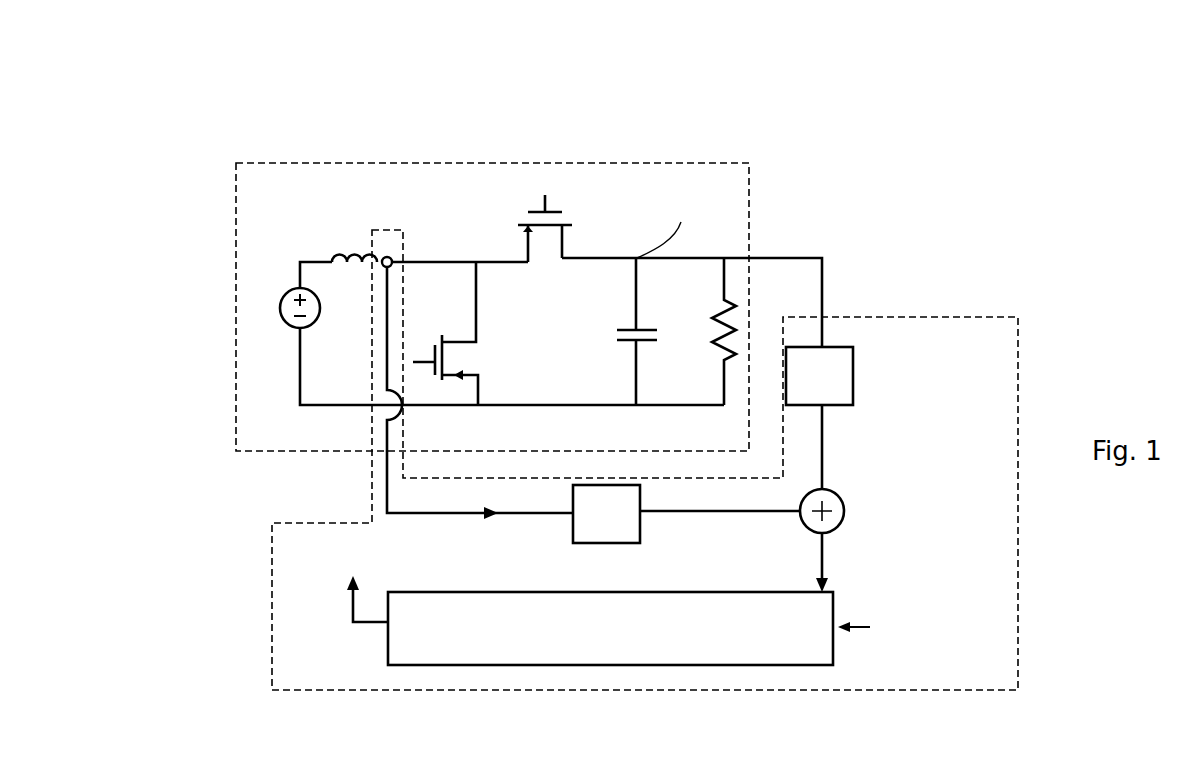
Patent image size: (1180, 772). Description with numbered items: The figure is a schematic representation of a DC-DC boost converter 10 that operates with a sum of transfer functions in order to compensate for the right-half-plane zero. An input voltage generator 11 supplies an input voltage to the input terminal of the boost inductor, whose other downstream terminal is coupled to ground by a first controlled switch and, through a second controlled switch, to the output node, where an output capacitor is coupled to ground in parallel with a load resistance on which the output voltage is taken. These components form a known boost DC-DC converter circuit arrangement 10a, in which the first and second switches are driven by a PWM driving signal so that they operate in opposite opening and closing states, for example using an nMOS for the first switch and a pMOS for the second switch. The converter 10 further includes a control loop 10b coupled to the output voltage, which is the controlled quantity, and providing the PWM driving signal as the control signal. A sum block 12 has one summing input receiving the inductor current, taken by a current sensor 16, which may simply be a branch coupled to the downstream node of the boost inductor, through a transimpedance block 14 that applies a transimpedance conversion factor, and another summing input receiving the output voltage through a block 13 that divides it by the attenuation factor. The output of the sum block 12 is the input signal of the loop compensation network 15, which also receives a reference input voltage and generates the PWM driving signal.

The DC-DC boost converter 10 is at (546, 130).
The boost DC-DC converter circuit arrangement 10a is at (750, 198).
The control loop 10b is at (658, 489).
The input voltage generator 11 is at (283, 290).
The sum block 12 is at (838, 499).
The dividing block 13 is at (850, 396).
The transimpedance block 14 is at (627, 525).
The loop compensation network 15 is at (637, 665).
The current sensor 16 is at (393, 259).